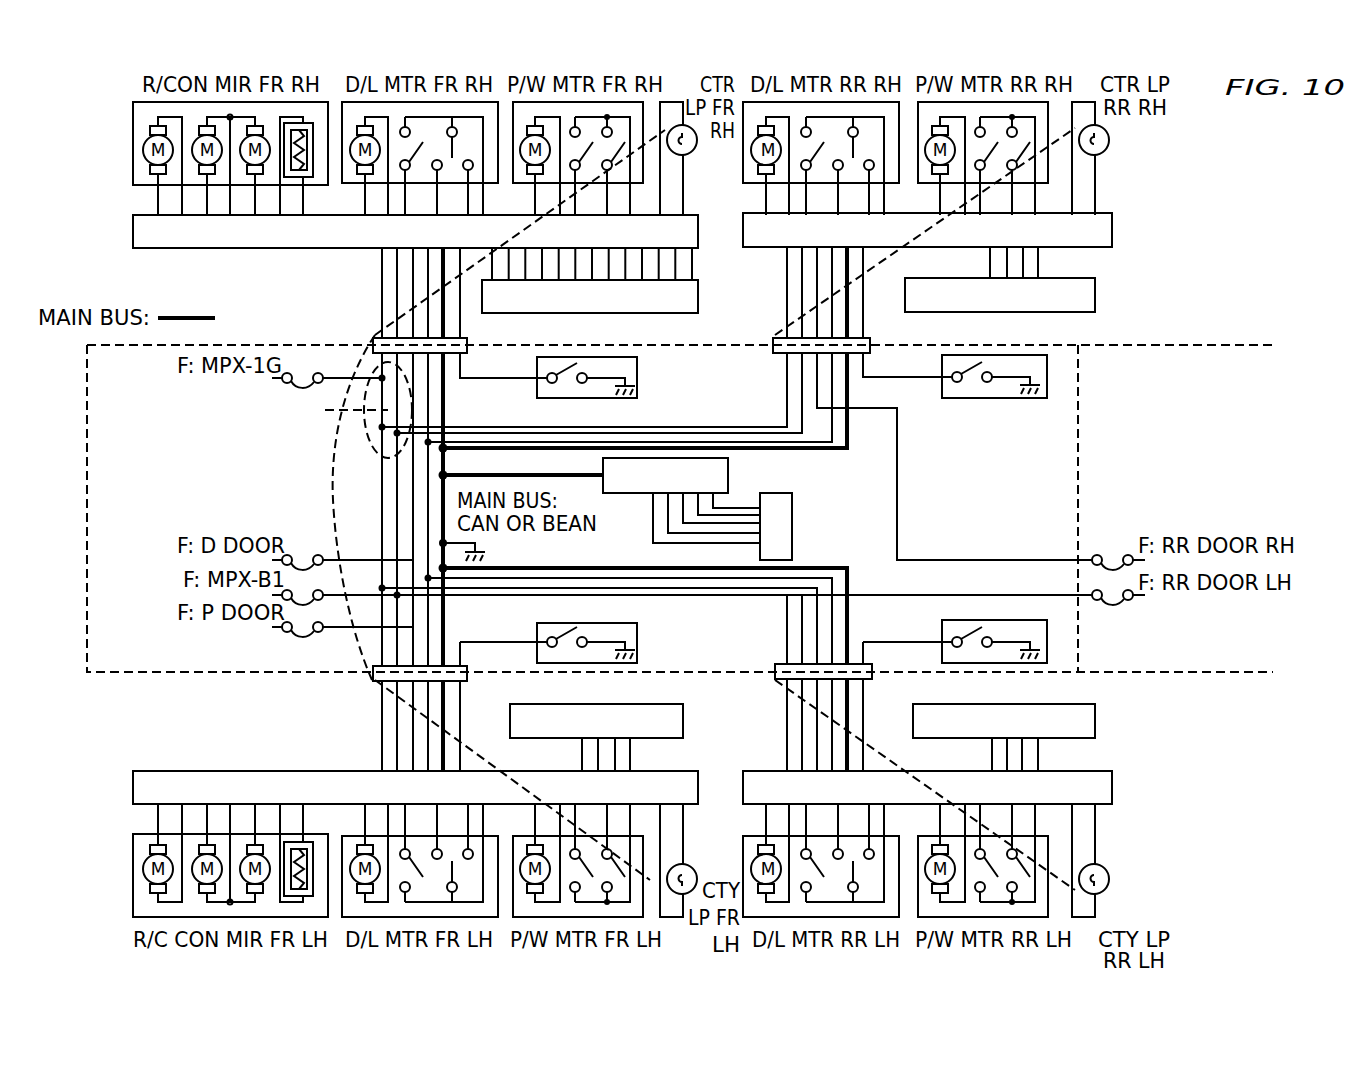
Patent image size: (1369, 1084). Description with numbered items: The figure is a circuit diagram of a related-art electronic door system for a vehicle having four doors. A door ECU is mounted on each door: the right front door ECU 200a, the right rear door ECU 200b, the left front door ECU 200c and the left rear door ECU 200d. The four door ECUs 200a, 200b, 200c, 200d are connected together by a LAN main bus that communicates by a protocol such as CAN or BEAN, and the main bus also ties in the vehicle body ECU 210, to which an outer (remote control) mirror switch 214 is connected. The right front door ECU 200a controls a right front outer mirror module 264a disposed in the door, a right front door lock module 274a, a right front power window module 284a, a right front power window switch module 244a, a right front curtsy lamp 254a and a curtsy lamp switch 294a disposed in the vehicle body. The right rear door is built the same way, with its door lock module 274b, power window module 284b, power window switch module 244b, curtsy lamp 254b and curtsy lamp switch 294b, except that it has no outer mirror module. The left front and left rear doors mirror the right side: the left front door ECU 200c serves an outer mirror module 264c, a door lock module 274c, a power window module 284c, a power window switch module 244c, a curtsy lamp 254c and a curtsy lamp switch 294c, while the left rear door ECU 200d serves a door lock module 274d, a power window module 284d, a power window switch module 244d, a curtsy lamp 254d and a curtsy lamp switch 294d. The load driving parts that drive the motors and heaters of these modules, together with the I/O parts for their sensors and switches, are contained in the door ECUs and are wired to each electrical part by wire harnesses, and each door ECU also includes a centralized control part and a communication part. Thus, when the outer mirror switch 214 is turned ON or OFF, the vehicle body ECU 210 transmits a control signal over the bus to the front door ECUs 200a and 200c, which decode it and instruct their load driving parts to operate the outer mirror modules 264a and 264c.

The right front door ECU 200a is at (133, 228).
The right rear door ECU 200b is at (1112, 228).
The left front door ECU 200c is at (133, 784).
The left rear door ECU 200d is at (1112, 784).
The vehicle body ECU 210 is at (728, 476).
The outer (remote control) mirror switch 214 is at (779, 493).
The right front power window switch module 244a is at (698, 290).
The right rear power window switch module 244b is at (1095, 292).
The left front power window switch module 244c is at (683, 716).
The left rear power window switch module 244d is at (1095, 716).
The right front curtsy lamp 254a is at (698, 141).
The right rear curtsy lamp 254b is at (1112, 134).
The left front curtsy lamp 254c is at (699, 884).
The left rear curtsy lamp 254d is at (1113, 883).
The right front outer (remote control) mirror module 264a is at (133, 133).
The left front outer (remote control) mirror module 264c is at (133, 868).
The right front door lock module 274a is at (360, 186).
The right rear door lock module 274b is at (960, 180).
The left front door lock module 274c is at (362, 838).
The left rear door lock module 274d is at (768, 838).
The right front power window module 284a is at (648, 170).
The right rear power window module 284b is at (1053, 160).
The left front power window module 284c is at (647, 866).
The left rear power window module 284d is at (1055, 878).
The curtsy lamp switch 294a is at (637, 370).
The curtsy lamp switch 294b is at (942, 385).
The curtsy lamp switch 294c is at (637, 634).
The curtsy lamp switch 294d is at (942, 636).